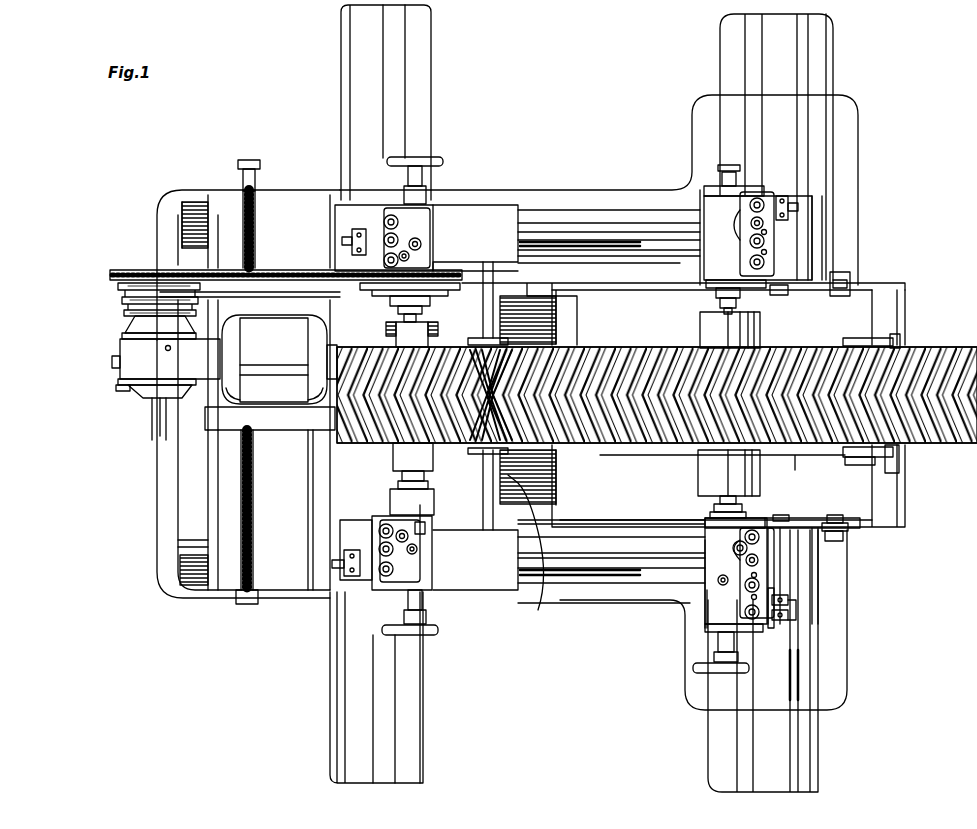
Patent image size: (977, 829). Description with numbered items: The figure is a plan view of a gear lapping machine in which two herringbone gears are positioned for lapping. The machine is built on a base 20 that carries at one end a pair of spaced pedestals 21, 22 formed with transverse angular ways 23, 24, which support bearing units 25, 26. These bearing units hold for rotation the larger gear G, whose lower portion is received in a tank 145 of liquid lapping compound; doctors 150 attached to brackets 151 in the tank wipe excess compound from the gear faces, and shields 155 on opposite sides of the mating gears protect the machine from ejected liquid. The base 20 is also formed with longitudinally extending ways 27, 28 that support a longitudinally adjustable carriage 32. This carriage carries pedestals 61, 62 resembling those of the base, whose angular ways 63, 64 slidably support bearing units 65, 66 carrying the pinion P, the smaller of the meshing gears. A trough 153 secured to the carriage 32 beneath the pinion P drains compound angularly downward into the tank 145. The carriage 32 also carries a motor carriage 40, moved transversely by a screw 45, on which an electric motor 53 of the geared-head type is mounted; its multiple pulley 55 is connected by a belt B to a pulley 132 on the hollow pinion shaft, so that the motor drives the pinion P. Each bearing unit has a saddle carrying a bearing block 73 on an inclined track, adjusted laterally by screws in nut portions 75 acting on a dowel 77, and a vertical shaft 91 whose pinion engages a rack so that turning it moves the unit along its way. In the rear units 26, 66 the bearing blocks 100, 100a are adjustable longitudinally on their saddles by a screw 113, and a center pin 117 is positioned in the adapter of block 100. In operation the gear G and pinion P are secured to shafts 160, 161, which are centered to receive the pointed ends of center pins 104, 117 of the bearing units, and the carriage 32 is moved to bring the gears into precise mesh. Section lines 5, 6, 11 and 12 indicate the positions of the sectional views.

The larger gear G is at (945, 352).
The belt B is at (236, 270).
The pinion P is at (330, 444).
The base 20 is at (562, 192).
The pedestal 21 is at (800, 690).
The pedestal 22 is at (812, 158).
The angular way 23 is at (780, 762).
The angular way 24 is at (788, 44).
The bearing unit 25 is at (790, 585).
The bearing unit 26 is at (794, 238).
The longitudinal way 27 is at (590, 603).
The longitudinal way 28 is at (597, 208).
The carriage 32 is at (306, 604).
The motor carriage 40 is at (200, 405).
The transverse screw 45 is at (240, 542).
The electric motor 53 is at (279, 359).
The multiple pulley 55 is at (118, 292).
The pedestal 61 is at (355, 746).
The pedestal 62 is at (431, 98).
The angular way 63 is at (385, 686).
The angular way 64 is at (393, 68).
The bearing unit 65 is at (362, 604).
The bearing unit 66 is at (440, 205).
The bearing block 73 is at (705, 620).
The nut portion 75 is at (795, 605).
The dowel 77 is at (772, 628).
The shaft 91 is at (770, 580).
The bearing block 100 is at (700, 200).
The bearing block 100a is at (460, 210).
The center pin 104 is at (760, 506).
The screw 113 is at (798, 207).
The center pin 117 is at (748, 322).
The pulley 132 is at (356, 300).
The tank 145 is at (865, 472).
The doctor 150 is at (832, 345).
The bracket 151 is at (860, 342).
The trough 153 is at (532, 554).
The shield 155 is at (540, 340).
The gear shaft 160 is at (762, 470).
The pinion shaft 161 is at (372, 463).
The section line 5 is at (306, 558).
The section line 6 is at (636, 588).
The section line 11 is at (310, 240).
The section line 12 is at (641, 512).